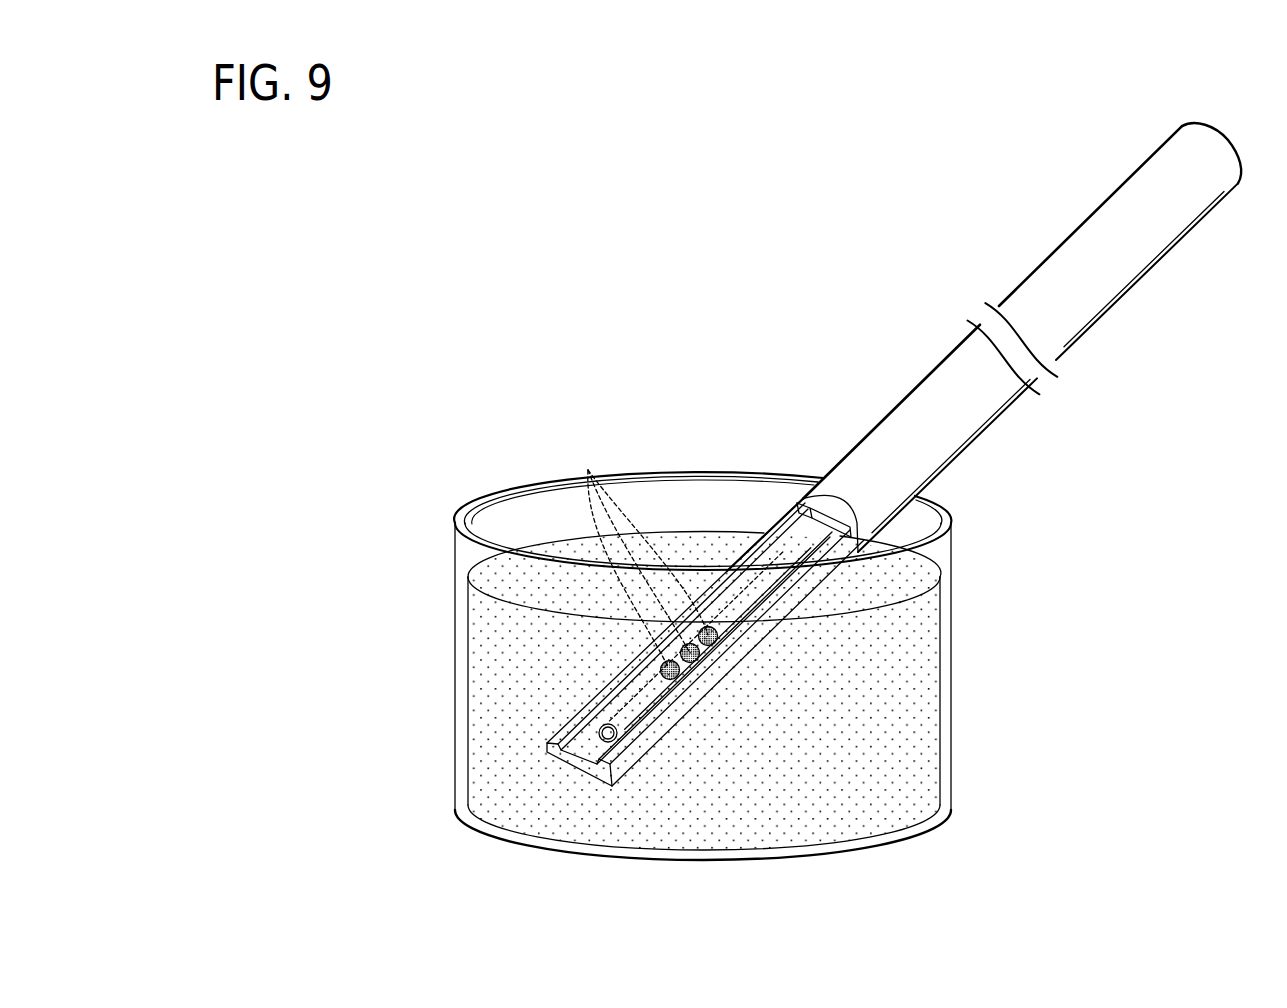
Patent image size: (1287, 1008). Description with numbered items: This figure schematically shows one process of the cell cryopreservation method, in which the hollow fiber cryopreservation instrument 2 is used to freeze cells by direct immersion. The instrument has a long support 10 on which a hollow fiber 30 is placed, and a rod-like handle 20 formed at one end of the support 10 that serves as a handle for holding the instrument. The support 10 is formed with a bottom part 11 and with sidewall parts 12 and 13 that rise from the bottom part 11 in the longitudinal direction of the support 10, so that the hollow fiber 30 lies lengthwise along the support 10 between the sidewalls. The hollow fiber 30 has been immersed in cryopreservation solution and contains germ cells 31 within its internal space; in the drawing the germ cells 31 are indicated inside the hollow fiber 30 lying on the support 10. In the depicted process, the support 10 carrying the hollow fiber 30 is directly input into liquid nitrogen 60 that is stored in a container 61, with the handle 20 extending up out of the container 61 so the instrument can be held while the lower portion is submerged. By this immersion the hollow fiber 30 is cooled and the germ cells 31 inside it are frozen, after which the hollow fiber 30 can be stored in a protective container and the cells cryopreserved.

The hollow fiber cryopreservation instrument 2 is at (829, 334).
The support 10 is at (1068, 612).
The bottom part 11 is at (783, 553).
The sidewall part 12 is at (802, 536).
The sidewall part 13 is at (830, 520).
The handle 20 is at (982, 402).
The hollow fiber 30 is at (650, 692).
The germ cells 31 is at (640, 554).
The liquid nitrogen 60 is at (487, 766).
The container 61 is at (506, 494).